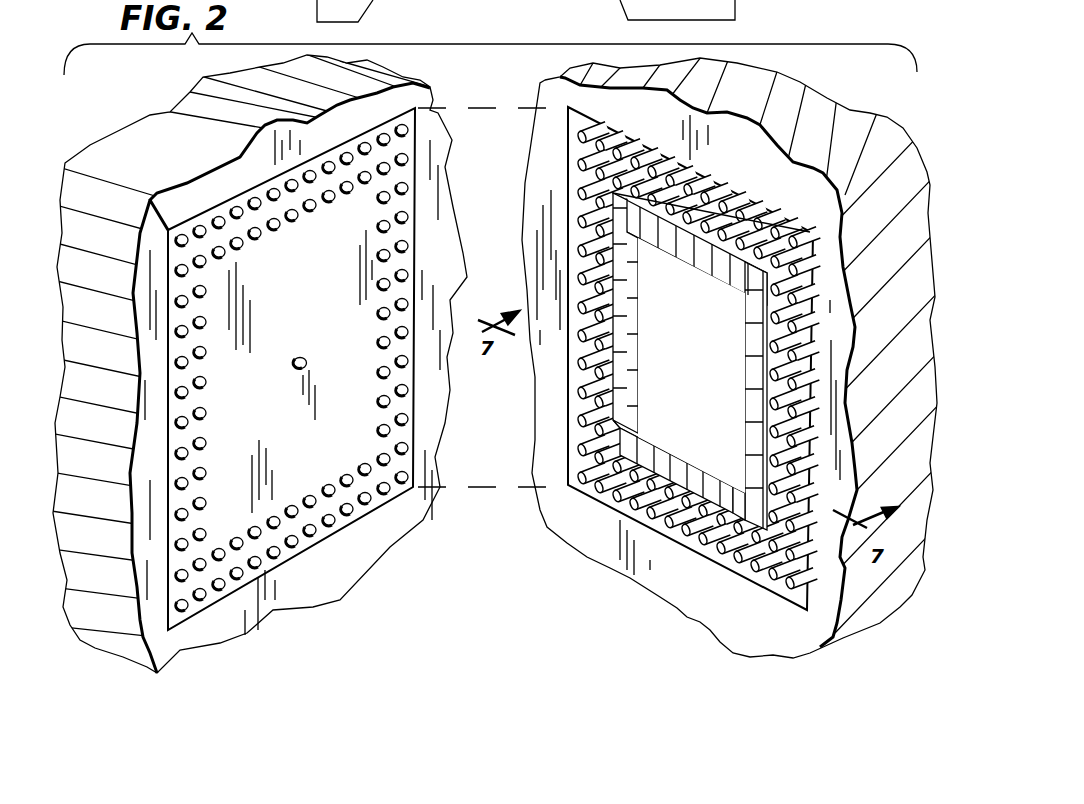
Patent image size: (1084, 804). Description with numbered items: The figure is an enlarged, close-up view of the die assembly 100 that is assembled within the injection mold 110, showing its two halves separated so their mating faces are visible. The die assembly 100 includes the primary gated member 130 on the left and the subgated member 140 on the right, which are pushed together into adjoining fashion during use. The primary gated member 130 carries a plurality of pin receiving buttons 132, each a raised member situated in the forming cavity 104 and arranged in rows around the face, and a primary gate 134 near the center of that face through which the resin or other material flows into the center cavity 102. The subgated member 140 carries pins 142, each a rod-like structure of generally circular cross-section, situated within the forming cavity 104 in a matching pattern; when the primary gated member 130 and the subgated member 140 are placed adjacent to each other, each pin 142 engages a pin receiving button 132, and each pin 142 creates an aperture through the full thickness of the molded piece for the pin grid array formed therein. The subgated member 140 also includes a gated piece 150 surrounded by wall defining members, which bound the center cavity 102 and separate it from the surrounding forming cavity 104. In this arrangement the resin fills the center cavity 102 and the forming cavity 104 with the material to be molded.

The die assembly 100 is at (495, 361).
The injection mold 110 is at (132, 106).
The primary gated member 130 is at (336, 391).
The pin receiving buttons 132 is at (286, 551).
The primary gate 134 is at (302, 359).
The subgated member 140 is at (547, 401).
The forming cavity 104 is at (566, 468).
The center cavity 102 is at (690, 409).
The gated piece 150 is at (753, 423).
The pins 142 is at (757, 588).